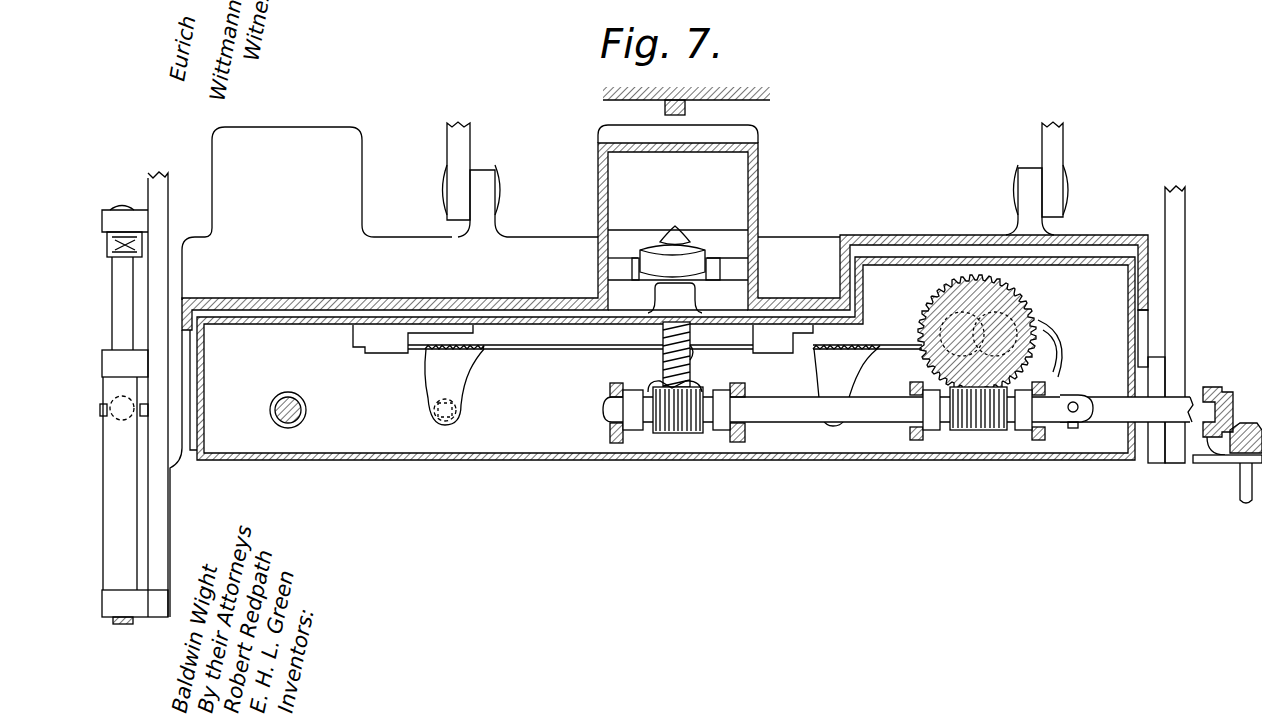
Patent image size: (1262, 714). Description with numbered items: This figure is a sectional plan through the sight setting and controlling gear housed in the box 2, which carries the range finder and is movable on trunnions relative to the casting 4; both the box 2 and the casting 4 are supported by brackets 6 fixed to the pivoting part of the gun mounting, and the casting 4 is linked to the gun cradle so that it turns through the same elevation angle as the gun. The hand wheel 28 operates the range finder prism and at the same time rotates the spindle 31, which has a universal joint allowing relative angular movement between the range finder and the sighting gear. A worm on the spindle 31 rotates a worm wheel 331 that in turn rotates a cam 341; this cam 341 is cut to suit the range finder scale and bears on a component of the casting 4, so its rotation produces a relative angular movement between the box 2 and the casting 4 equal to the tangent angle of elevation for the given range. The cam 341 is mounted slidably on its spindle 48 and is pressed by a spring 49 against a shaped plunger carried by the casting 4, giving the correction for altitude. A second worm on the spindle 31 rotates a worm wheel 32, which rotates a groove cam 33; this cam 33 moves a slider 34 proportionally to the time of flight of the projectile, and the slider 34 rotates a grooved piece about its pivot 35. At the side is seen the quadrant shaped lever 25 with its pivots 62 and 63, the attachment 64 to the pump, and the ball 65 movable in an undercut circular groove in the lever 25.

The box 2 is at (470, 462).
The casting 4 is at (1108, 230).
The brackets 6 is at (1160, 378).
The quadrant shaped lever 25 is at (135, 483).
The hand wheel 28 is at (1234, 461).
The spindle 31 is at (776, 408).
The worm wheel 32 is at (1010, 305).
The groove cam 33 is at (1050, 348).
The slider 34 is at (540, 350).
The pivot 35 is at (838, 418).
The spindle 48 is at (664, 358).
The spring 49 is at (691, 345).
The pivot 62 is at (118, 622).
The pivot 63 is at (112, 222).
The attachment to the pump 64 is at (142, 246).
The ball 65 is at (128, 420).
The worm wheel 331 is at (705, 390).
The cam 341 is at (690, 236).